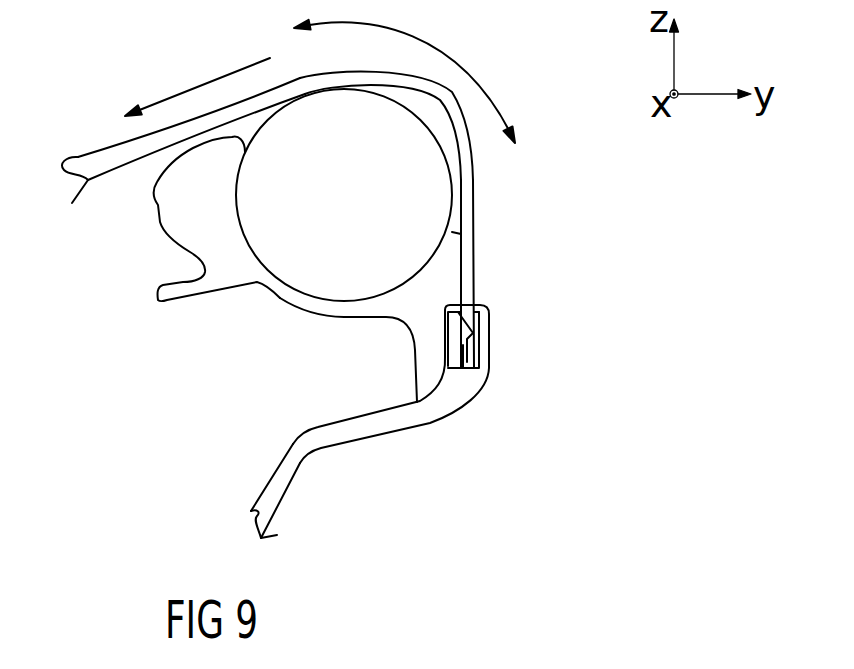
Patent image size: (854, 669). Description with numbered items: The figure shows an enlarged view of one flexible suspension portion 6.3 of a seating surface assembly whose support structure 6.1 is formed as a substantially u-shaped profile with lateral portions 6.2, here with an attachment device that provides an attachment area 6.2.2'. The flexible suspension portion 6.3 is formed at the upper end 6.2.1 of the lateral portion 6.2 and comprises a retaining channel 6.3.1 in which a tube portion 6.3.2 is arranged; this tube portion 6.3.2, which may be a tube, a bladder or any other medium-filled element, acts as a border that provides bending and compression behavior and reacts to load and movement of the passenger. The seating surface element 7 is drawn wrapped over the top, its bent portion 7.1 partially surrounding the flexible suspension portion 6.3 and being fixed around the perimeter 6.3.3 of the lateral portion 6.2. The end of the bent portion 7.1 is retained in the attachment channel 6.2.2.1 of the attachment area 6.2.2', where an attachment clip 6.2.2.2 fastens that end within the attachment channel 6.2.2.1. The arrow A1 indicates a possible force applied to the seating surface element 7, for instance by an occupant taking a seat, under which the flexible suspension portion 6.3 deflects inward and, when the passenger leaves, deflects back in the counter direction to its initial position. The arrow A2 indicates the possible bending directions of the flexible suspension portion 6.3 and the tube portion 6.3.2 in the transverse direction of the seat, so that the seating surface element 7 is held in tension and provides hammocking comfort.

The seating surface element 7 is at (90, 160).
The bent portion 7.1 is at (453, 98).
The arrow indicating force direction A1 is at (197, 77).
The arrow indicating bending directions A2 is at (404, 71).
The support structure 6.1 is at (248, 511).
The lateral portion 6.2 is at (272, 492).
The upper end 6.2.1 is at (443, 402).
The attachment area 6.2.2' is at (539, 332).
The attachment channel 6.2.2.1 is at (482, 360).
The attachment clip 6.2.2.2 is at (485, 313).
The flexible suspension portion 6.3 is at (450, 240).
The retaining channel 6.3.1 is at (328, 307).
The tube portion 6.3.2 is at (305, 248).
The perimeter 6.3.3 is at (455, 270).